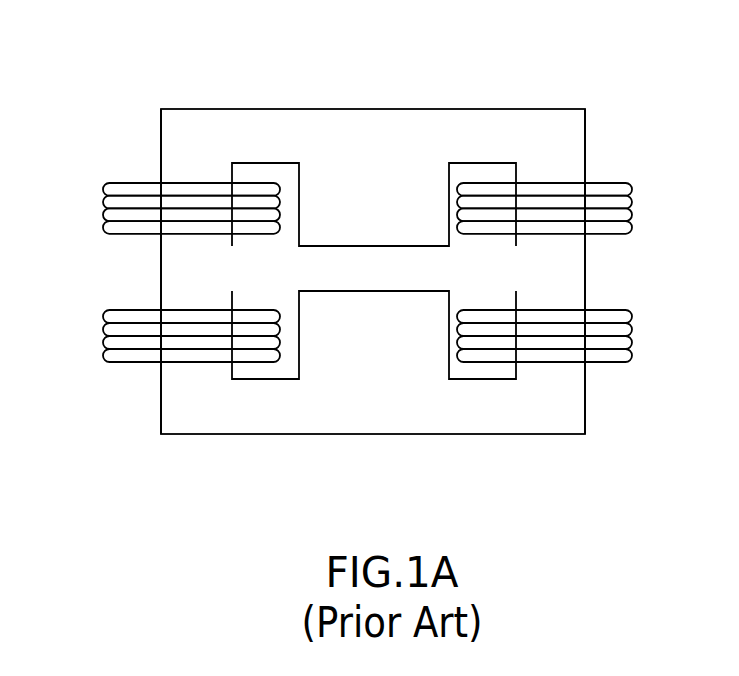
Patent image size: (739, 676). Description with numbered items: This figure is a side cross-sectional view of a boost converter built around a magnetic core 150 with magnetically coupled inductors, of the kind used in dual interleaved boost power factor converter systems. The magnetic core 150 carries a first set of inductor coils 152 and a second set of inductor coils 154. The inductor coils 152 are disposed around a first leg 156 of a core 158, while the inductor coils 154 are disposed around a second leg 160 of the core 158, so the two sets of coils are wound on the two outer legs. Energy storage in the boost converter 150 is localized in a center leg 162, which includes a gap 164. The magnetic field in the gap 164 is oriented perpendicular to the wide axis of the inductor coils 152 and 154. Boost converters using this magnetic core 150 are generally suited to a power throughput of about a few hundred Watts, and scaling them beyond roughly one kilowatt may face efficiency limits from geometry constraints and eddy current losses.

The magnetic core 150 is at (600, 68).
The first set of inductor coils 152 is at (105, 210).
The second set of inductor coils 154 is at (630, 210).
The first leg 156 is at (175, 137).
The core 158 is at (351, 158).
The second leg 160 is at (572, 138).
The center leg 162 is at (378, 363).
The gap 164 is at (351, 281).